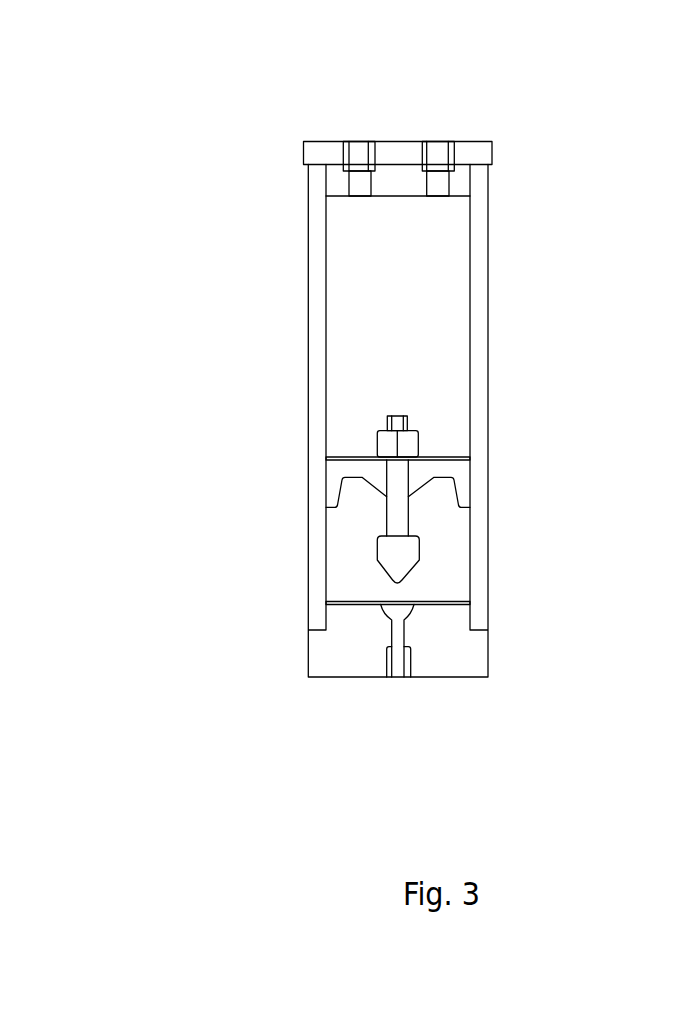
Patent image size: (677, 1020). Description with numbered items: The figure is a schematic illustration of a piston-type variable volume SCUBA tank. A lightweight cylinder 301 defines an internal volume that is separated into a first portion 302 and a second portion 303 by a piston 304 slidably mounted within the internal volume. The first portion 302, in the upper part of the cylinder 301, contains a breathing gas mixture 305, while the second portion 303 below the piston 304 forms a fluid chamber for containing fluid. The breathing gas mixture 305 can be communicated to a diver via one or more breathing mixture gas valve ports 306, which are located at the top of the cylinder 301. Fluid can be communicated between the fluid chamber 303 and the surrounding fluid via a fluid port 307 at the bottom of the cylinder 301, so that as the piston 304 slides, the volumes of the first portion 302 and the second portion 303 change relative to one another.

The lightweight cylinder 301 is at (491, 293).
The first portion 302 is at (358, 296).
The second portion 303 is at (454, 533).
The piston 304 is at (448, 445).
The breathing gas mixture 305 is at (442, 240).
The breathing mixture gas valve ports 306 is at (430, 130).
The fluid port 307 is at (379, 658).